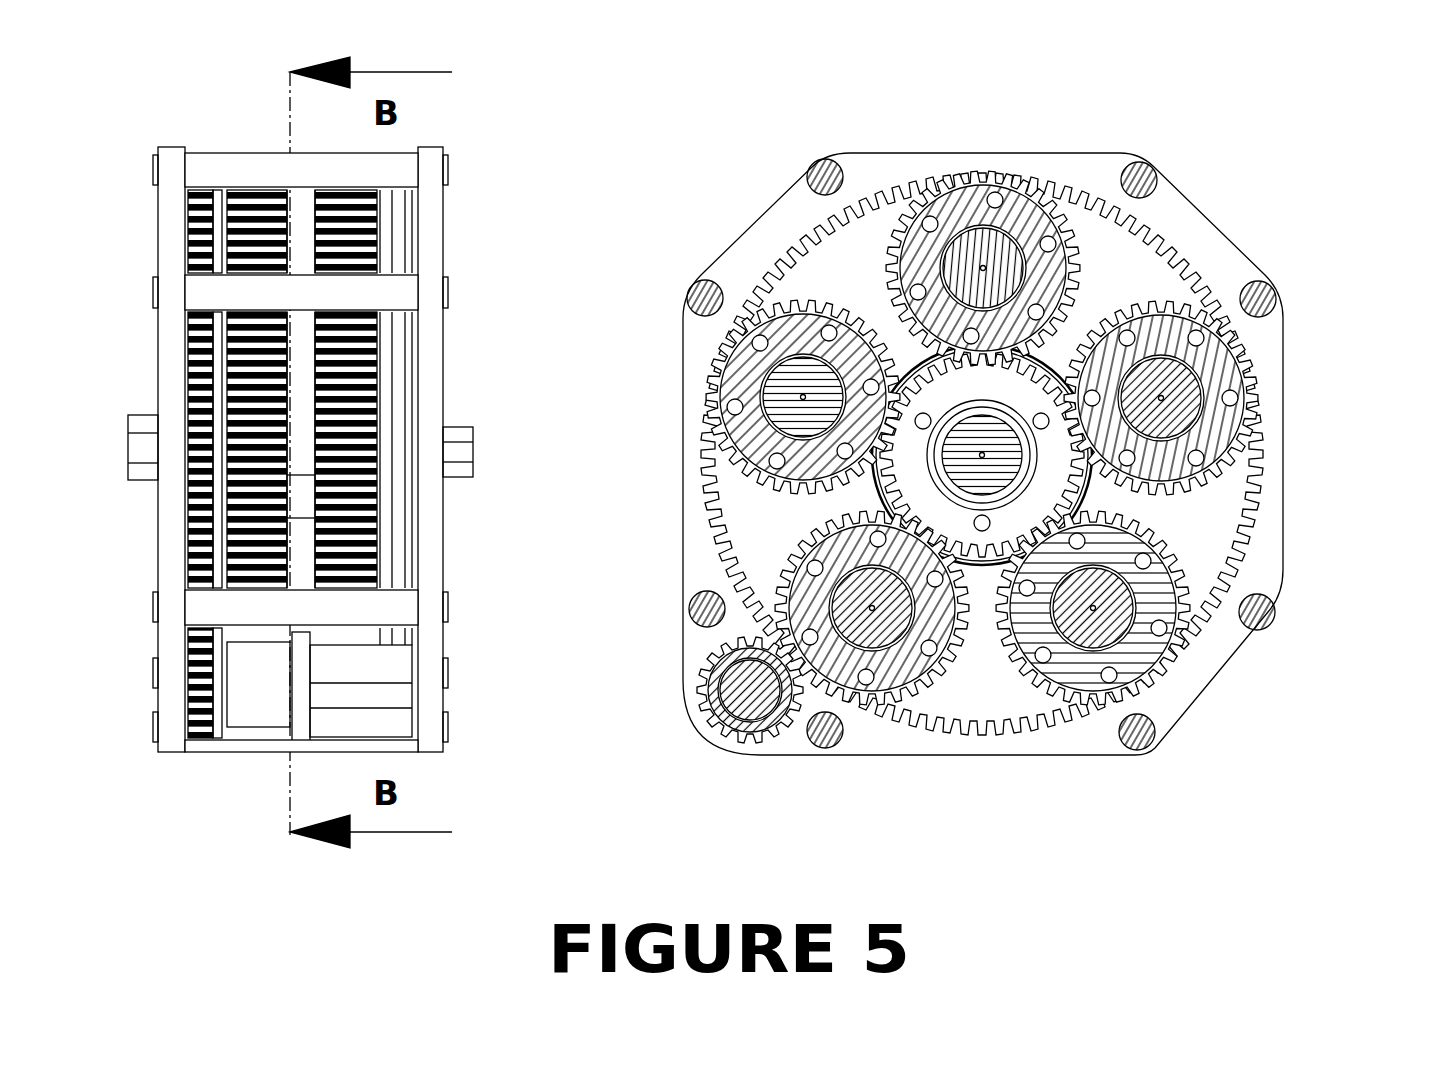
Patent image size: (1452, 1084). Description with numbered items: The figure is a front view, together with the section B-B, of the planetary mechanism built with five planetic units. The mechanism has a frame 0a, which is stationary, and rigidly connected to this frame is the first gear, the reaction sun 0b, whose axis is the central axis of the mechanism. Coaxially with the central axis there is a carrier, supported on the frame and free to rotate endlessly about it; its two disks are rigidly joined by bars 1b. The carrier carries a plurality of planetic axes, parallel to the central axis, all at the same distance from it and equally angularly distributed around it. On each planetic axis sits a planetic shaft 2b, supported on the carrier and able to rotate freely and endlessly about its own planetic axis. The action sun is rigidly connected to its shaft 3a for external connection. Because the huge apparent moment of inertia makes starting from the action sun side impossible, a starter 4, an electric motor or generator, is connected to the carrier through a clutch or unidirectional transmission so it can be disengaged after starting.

The frame 0a is at (1202, 673).
The reaction sun 0b is at (908, 455).
The bar 1b is at (906, 587).
The planetic shaft 2b is at (1024, 563).
The shaft for external connection of the action sun 3a is at (1010, 457).
The starter 4 is at (746, 688).